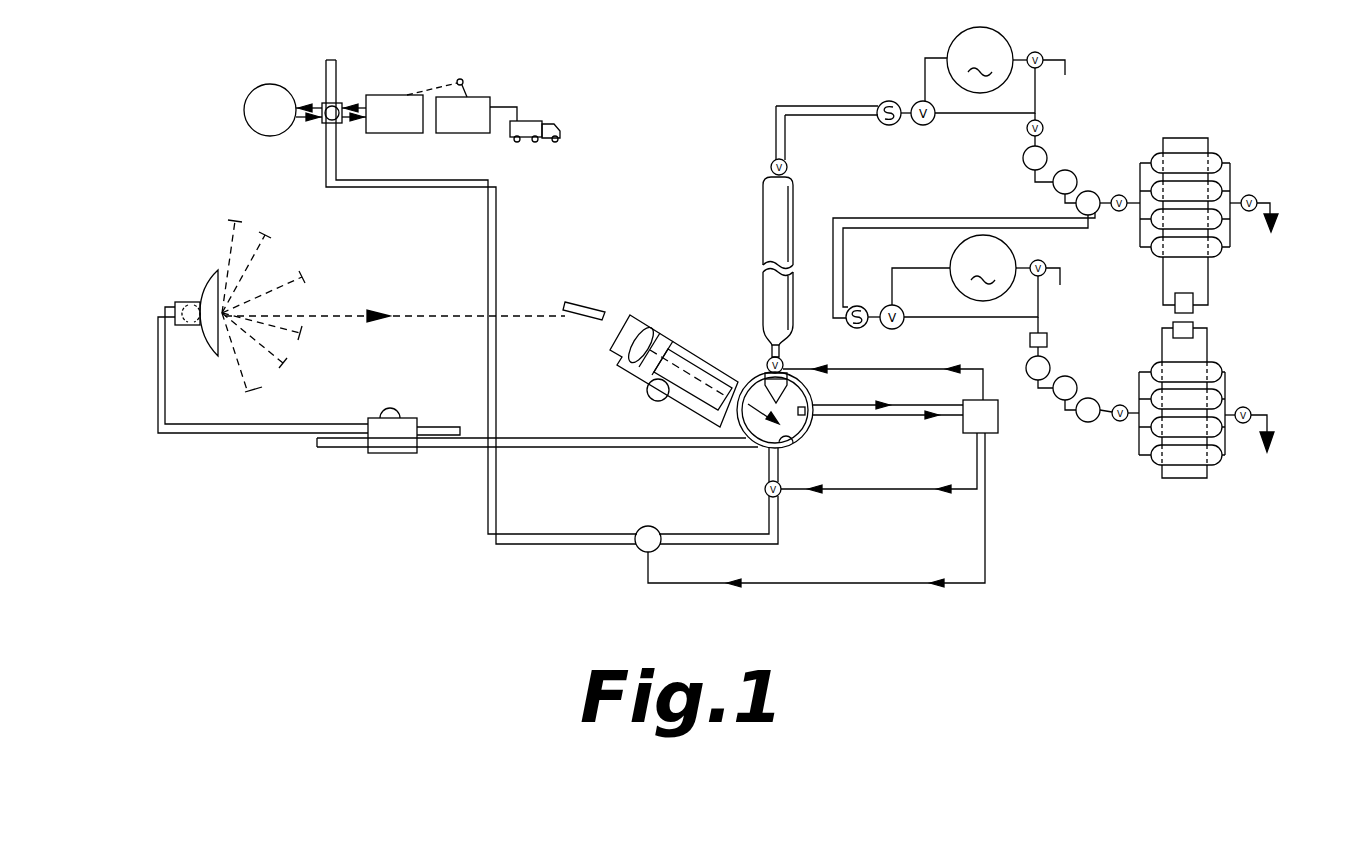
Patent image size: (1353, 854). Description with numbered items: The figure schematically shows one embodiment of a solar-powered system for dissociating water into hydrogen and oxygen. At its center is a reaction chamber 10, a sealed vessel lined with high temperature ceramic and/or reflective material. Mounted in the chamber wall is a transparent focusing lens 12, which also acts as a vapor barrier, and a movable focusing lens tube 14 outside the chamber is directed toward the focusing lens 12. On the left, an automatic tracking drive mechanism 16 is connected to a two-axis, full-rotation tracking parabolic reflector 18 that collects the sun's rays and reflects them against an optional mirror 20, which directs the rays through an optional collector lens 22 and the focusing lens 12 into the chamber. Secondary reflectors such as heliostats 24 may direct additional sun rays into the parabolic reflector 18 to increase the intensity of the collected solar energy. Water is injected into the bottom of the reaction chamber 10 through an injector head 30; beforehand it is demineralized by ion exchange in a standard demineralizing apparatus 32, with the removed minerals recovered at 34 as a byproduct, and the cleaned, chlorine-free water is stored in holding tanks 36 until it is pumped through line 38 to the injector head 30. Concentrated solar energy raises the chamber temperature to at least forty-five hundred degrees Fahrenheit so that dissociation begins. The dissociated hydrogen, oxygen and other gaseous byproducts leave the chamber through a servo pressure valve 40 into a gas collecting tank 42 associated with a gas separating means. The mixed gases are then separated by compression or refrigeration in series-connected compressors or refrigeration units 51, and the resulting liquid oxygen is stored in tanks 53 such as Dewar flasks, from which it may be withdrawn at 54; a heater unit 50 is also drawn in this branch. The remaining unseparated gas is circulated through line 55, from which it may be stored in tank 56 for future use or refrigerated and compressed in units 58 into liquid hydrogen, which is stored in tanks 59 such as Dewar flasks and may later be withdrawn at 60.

The reaction chamber 10 is at (814, 436).
The focusing lens 12 is at (742, 392).
The focusing lens tube 14 is at (613, 351).
The automatic tracking drive mechanism 16 is at (182, 302).
The tracking parabolic reflector 18 is at (205, 346).
The mirror 20 is at (583, 294).
The collector lens 22 is at (647, 332).
The heliostats 24 is at (303, 334).
The injector head 30 is at (789, 445).
The demineralizing apparatus 32 is at (383, 95).
The mineral recovery 34 is at (480, 97).
The holding tanks 36 is at (243, 108).
The line 38 is at (530, 534).
The servo pressure valve 40 is at (782, 365).
The gas collecting tank 42 is at (793, 231).
The heater unit 50 is at (920, 76).
The compressors or refrigeration units 51 is at (1047, 150).
The tanks 53 is at (1223, 154).
The outlet 54 is at (1276, 208).
The line 55 is at (917, 216).
The tank 56 is at (953, 291).
The units 58 is at (1073, 382).
The tanks 59 is at (1148, 462).
The liquid hydrogen withdrawal 60 is at (1275, 415).